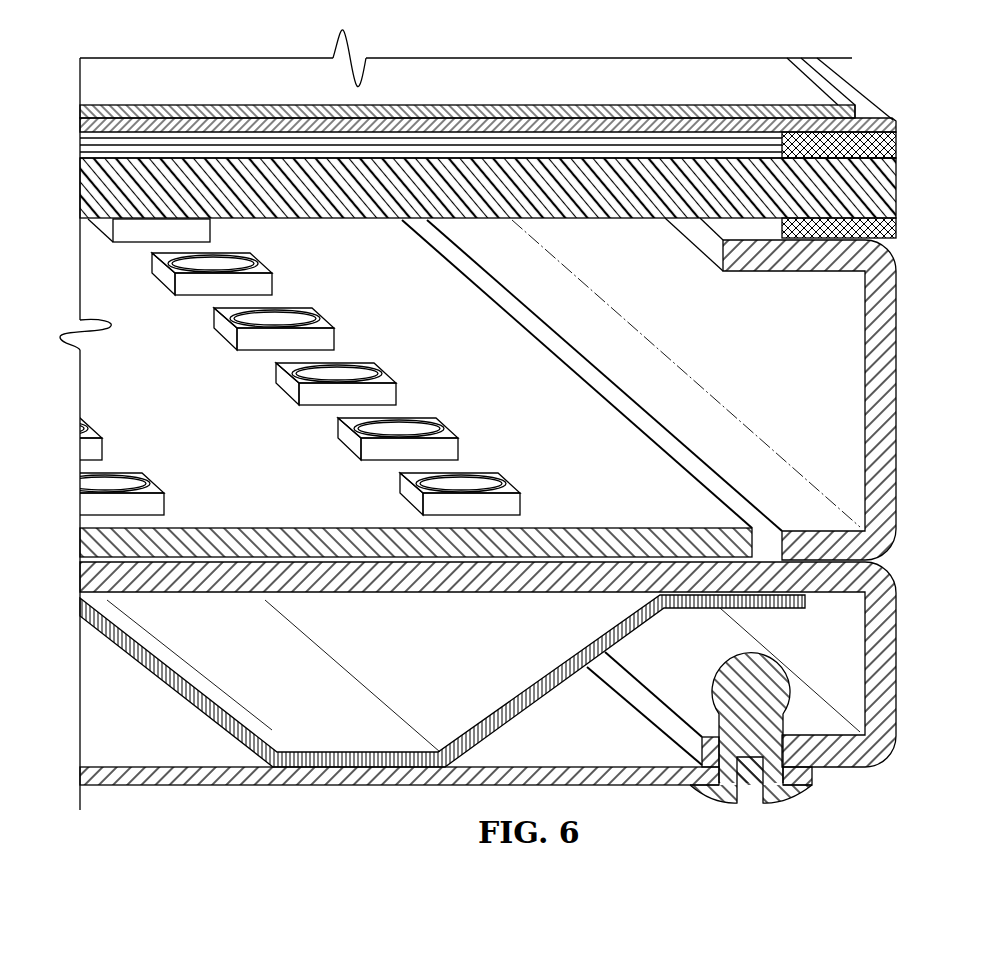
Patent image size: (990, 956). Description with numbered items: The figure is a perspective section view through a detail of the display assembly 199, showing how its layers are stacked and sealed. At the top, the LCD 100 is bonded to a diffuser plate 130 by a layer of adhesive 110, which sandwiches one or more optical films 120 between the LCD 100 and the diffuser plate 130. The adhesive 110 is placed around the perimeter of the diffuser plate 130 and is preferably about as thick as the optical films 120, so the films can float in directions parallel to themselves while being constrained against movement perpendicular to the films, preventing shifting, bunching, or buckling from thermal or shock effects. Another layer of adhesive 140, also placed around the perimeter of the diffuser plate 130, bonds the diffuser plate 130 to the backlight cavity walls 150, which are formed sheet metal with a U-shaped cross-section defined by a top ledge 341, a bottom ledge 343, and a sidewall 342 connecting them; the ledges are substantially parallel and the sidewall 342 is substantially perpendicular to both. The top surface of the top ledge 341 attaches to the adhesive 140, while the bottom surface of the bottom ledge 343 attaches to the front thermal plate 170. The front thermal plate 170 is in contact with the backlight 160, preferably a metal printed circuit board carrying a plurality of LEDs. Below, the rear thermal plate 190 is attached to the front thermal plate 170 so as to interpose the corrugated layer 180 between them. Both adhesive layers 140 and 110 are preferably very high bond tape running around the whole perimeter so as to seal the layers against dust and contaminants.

The assembly 199 is at (876, 84).
The LCD 100 is at (870, 125).
The adhesive 110 is at (888, 148).
The optical films 120 is at (738, 147).
The diffuser plate 130 is at (882, 193).
The adhesive 140 is at (865, 240).
The backlight cavity walls 150 is at (842, 400).
The top ledge 341 is at (790, 263).
The sidewall 342 is at (886, 408).
The bottom ledge 343 is at (825, 537).
The backlight 160 is at (645, 504).
The front thermal plate 170 is at (887, 650).
The corrugated layer 180 is at (468, 742).
The rear thermal plate 190 is at (595, 778).